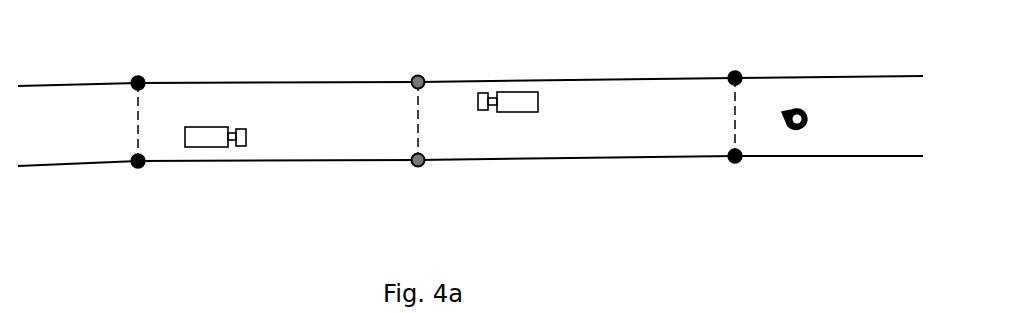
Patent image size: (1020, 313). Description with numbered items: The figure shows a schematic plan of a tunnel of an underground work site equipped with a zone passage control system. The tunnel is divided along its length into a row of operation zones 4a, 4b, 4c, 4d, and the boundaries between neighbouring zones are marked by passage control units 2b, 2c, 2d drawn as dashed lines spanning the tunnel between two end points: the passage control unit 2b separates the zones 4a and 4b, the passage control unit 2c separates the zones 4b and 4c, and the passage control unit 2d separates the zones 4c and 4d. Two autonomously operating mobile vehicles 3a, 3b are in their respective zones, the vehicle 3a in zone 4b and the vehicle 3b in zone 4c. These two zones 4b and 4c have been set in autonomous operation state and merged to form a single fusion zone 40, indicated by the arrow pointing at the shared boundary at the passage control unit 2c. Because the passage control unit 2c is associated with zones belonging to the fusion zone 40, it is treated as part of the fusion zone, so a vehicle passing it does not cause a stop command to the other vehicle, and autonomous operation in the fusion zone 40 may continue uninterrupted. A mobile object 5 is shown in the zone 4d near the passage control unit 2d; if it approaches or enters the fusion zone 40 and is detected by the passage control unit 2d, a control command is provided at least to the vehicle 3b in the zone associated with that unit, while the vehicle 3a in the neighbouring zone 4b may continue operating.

The passage control unit 2b is at (138, 118).
The passage control unit 2c is at (418, 125).
The passage control unit 2d is at (735, 120).
The autonomously operating mobile vehicle 3a is at (212, 140).
The autonomously operating mobile vehicle 3b is at (503, 95).
The operation zone 4a is at (62, 119).
The operation zone 4b is at (388, 117).
The operation zone 4c is at (693, 116).
The operation zone 4d is at (900, 109).
The mobile object 5 is at (800, 110).
The fusion zone 40 is at (417, 188).